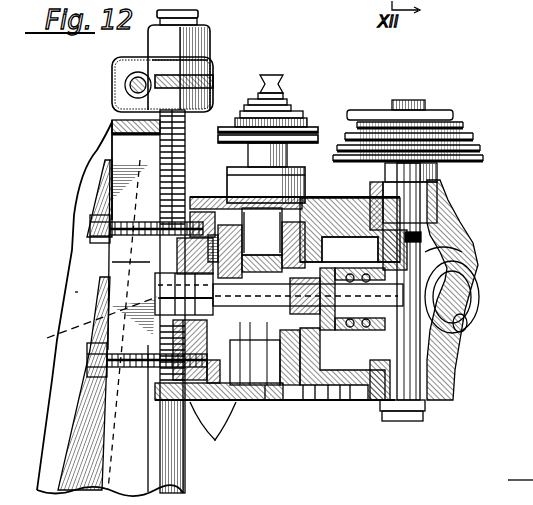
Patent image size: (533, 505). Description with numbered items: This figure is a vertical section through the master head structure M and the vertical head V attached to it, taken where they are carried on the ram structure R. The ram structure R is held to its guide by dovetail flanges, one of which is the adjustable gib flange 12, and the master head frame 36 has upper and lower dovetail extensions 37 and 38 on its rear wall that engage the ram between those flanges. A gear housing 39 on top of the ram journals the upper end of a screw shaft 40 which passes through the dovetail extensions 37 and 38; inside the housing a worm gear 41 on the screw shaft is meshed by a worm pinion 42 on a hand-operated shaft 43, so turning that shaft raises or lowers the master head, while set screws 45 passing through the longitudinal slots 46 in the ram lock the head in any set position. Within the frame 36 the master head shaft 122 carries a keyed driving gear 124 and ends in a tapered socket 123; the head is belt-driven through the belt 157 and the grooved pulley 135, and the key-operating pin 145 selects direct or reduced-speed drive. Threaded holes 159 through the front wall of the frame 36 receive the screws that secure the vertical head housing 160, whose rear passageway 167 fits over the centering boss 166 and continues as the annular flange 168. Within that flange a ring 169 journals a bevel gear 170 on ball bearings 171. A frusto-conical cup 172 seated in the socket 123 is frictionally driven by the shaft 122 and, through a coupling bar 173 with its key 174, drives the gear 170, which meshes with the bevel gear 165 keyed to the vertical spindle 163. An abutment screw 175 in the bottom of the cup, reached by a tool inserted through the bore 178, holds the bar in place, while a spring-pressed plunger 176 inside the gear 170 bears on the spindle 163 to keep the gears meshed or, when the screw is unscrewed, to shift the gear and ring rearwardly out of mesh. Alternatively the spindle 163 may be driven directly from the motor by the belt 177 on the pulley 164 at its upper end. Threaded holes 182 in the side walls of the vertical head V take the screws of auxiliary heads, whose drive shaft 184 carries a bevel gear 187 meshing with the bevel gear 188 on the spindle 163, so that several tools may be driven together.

The guide flange 12 is at (170, 491).
The frame 36 is at (213, 421).
The upper dovetail extension 37 is at (163, 220).
The lower dovetail extension 38 is at (150, 392).
The gear housing 39 is at (112, 74).
The screw shaft 40 is at (186, 134).
The worm gear 41 is at (213, 80).
The worm pinion 42 is at (132, 95).
The shaft 43 is at (128, 90).
The set screws 45 is at (90, 229).
The longitudinal slots 46 is at (118, 270).
The shaft 122 is at (232, 362).
The tapered recess or socket 123 is at (278, 262).
The driving gear 124 is at (258, 232).
The pulley 135 is at (243, 138).
The key-operating pin 145 is at (274, 74).
The belt 157 is at (305, 113).
The threaded holes 159 is at (302, 216).
The housing 160 is at (316, 400).
The vertical spindle 163 is at (398, 420).
The pulley 164 is at (462, 138).
The bevel gear 165 is at (444, 230).
The centering boss 166 is at (304, 400).
The passageway 167 is at (328, 236).
The annular flange 168 is at (358, 352).
The ring 169 is at (332, 268).
The bevel gear 170 is at (380, 330).
The ball bearings 171 is at (351, 400).
The frusto-conical cup 172 is at (329, 400).
The coupling bar 173 is at (322, 232).
The key 174 is at (279, 299).
The abutment screw 175 is at (268, 398).
The spring-pressed plunger 176 is at (403, 281).
The belt 177 is at (358, 112).
The bore 178 is at (85, 322).
The threaded holes 182 is at (467, 326).
The drive shaft 184 is at (520, 431).
The bevel gear 187 is at (465, 300).
The bevel gear 188 is at (458, 272).
The master head structure M is at (211, 448).
The ram structure R is at (78, 292).
The vertical head V is at (341, 400).